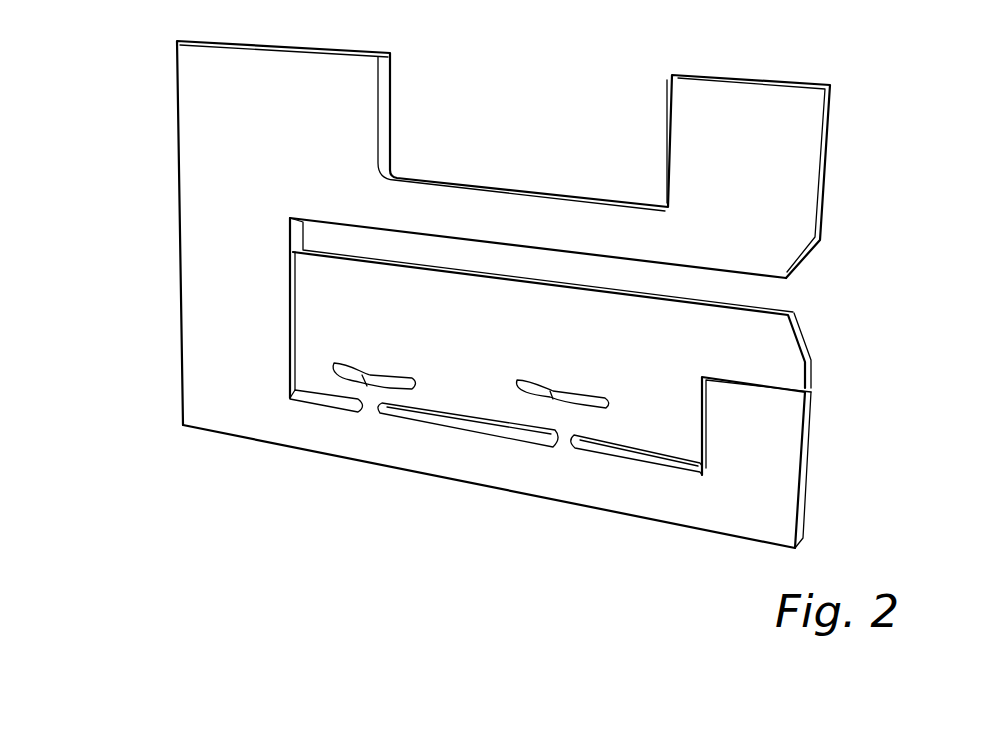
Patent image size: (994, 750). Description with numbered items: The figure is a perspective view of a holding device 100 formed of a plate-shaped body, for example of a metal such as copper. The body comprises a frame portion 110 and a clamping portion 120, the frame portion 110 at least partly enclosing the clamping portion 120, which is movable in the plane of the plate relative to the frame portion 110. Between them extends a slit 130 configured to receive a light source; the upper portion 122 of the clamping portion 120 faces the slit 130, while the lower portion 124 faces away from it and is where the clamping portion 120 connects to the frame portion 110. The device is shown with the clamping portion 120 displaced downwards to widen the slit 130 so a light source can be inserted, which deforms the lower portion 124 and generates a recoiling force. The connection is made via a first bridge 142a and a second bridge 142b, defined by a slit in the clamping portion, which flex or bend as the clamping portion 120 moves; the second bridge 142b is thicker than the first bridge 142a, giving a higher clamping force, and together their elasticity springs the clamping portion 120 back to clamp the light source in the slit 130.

The holding device 100 is at (138, 94).
The frame portion 110 is at (181, 268).
The slit 130 is at (806, 297).
The upper portion 122 is at (459, 268).
The clamping portion 120 is at (812, 378).
The lower portion 124 is at (444, 420).
The first bridge 142a is at (362, 380).
The second bridge 142b is at (582, 415).